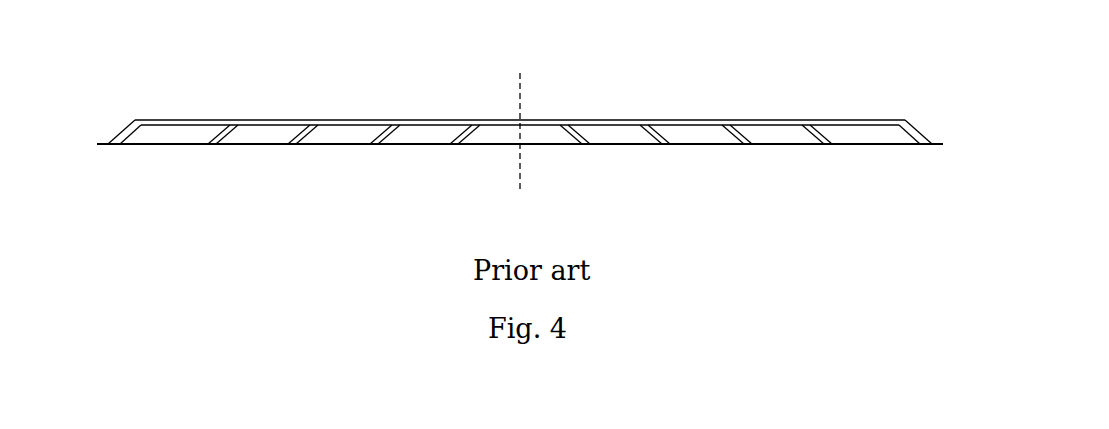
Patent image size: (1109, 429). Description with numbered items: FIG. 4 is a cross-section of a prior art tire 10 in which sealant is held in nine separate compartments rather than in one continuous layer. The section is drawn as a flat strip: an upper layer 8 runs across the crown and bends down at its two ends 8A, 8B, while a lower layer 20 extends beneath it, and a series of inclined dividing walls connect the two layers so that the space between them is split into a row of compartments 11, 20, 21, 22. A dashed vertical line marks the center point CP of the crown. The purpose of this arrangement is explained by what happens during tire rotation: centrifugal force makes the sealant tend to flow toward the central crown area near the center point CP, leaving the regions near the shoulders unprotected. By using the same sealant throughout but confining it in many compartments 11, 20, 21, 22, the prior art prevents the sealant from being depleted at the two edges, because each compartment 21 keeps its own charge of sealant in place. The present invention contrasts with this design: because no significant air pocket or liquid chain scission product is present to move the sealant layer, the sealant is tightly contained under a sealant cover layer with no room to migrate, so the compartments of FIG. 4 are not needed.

The sandwich panel (prior art) 10 is at (524, 138).
The upper skin 8 is at (347, 120).
The left end portion of upper skin 8A is at (110, 138).
The right end portion of upper skin 8B is at (930, 136).
The compartment 20 is at (170, 143).
The compartment 21 is at (549, 175).
The compartment 11 is at (503, 138).
The compartment 22 is at (858, 143).
The center point CP is at (519, 122).